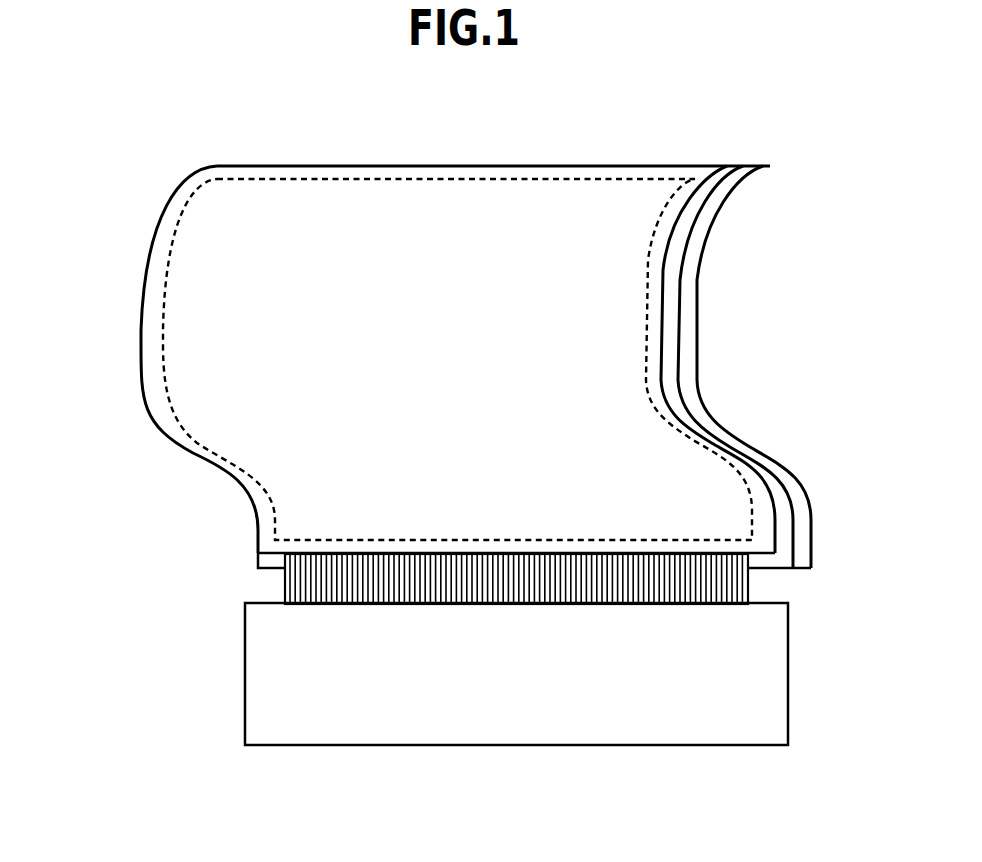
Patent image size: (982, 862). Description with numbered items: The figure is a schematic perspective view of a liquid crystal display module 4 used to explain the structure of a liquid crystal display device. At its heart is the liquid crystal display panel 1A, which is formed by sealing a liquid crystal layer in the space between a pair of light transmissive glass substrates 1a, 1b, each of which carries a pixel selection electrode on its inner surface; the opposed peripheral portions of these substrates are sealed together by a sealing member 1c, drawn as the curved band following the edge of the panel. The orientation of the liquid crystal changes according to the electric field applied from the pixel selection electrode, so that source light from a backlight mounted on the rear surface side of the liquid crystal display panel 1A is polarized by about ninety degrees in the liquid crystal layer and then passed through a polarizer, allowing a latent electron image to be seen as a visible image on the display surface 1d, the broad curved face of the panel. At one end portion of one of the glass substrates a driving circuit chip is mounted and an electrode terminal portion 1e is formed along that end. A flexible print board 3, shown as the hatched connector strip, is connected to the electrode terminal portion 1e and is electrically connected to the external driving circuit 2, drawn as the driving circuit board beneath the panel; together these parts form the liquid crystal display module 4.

The liquid crystal display panel 1A is at (343, 165).
The light transmissive glass substrate 1a is at (597, 165).
The light transmissive glass substrate 1b is at (698, 247).
The sealing member 1c is at (670, 312).
The display surface 1d is at (188, 354).
The electrode terminal portion 1e is at (783, 560).
The external driving circuit 2 is at (763, 669).
The flexible print board 3 is at (738, 580).
The liquid crystal display module 4 is at (150, 600).